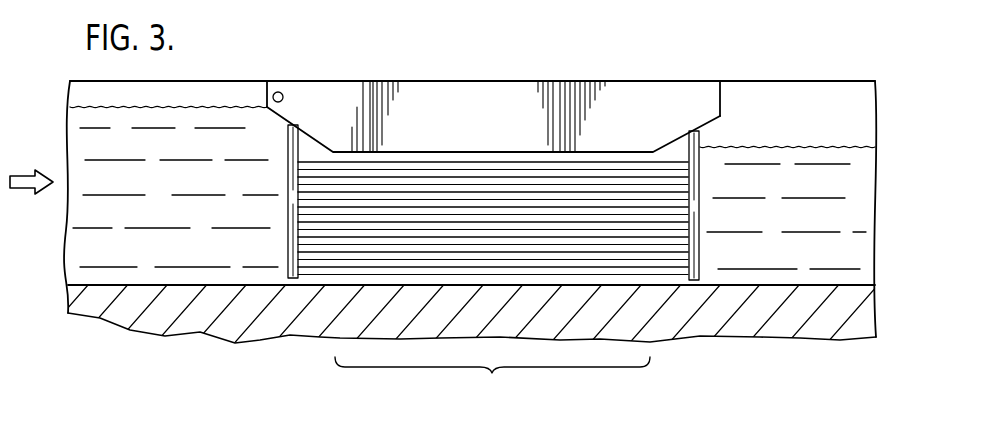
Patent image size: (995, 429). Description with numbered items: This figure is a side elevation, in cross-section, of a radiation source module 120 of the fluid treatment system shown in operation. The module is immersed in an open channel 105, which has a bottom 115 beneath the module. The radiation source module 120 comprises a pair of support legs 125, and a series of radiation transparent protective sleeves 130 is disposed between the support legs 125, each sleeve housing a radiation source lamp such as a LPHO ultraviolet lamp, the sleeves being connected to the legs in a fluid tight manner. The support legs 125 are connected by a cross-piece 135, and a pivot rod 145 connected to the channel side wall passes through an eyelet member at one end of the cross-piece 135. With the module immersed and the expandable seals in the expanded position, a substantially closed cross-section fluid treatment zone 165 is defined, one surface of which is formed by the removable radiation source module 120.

The open channel 105 is at (70, 284).
The bottom 115 is at (690, 328).
The radiation source module 120 is at (493, 89).
The support legs 125 is at (290, 158).
The radiation transparent protective sleeves 130 is at (335, 251).
The cross-piece 135 is at (503, 127).
The pivot rod 145 is at (281, 92).
The fluid treatment zone 165 is at (492, 383).